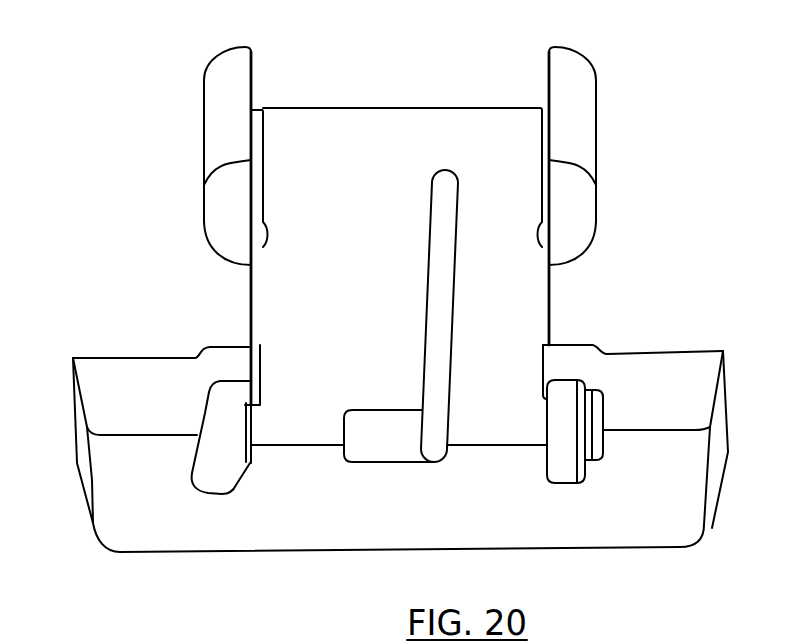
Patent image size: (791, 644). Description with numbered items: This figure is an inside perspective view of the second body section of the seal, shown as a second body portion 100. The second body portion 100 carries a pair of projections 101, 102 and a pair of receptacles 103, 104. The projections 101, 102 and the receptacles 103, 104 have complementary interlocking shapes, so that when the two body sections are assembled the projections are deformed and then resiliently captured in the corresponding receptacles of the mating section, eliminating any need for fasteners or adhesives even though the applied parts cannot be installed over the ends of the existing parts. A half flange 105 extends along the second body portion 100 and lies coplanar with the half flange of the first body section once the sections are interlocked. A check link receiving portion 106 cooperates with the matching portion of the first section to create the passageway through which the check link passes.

The second body portion 100 is at (376, 330).
The projection 101 is at (205, 98).
The projection 102 is at (597, 98).
The receptacle 103 is at (249, 303).
The receptacle 104 is at (551, 302).
The half flange 105 is at (118, 540).
The check link receiving portion 106 is at (347, 126).